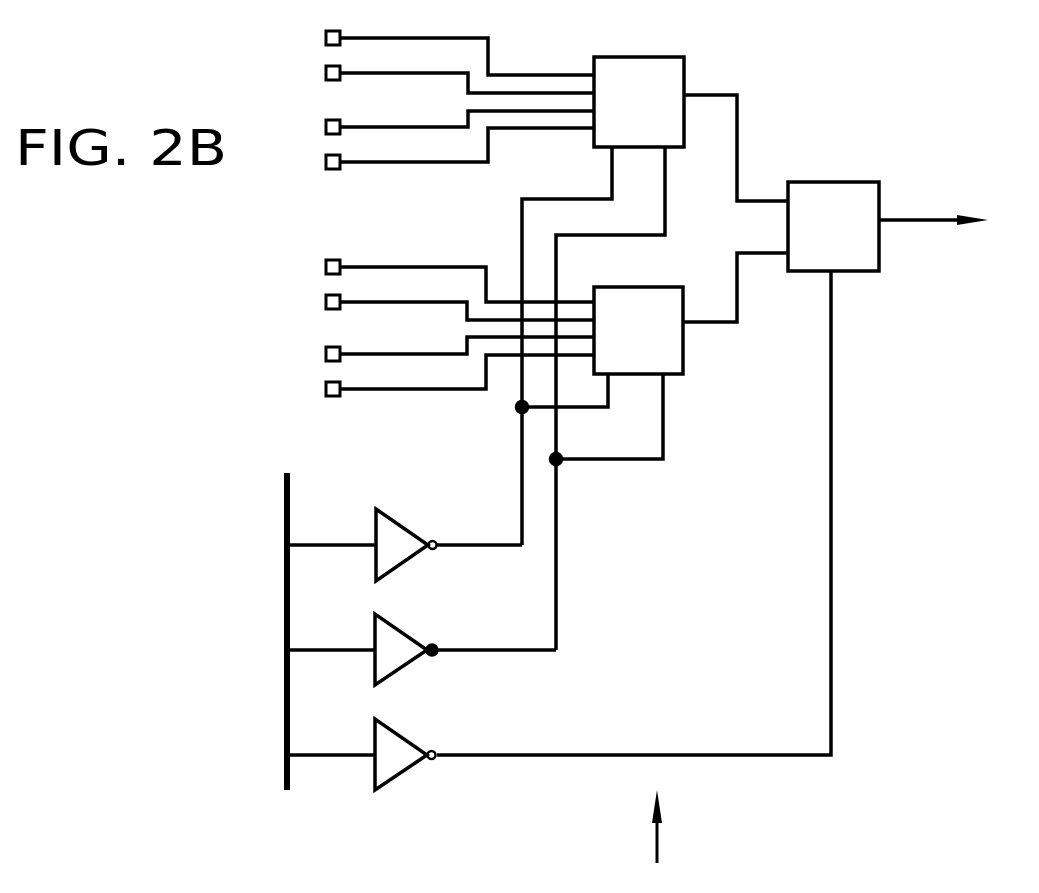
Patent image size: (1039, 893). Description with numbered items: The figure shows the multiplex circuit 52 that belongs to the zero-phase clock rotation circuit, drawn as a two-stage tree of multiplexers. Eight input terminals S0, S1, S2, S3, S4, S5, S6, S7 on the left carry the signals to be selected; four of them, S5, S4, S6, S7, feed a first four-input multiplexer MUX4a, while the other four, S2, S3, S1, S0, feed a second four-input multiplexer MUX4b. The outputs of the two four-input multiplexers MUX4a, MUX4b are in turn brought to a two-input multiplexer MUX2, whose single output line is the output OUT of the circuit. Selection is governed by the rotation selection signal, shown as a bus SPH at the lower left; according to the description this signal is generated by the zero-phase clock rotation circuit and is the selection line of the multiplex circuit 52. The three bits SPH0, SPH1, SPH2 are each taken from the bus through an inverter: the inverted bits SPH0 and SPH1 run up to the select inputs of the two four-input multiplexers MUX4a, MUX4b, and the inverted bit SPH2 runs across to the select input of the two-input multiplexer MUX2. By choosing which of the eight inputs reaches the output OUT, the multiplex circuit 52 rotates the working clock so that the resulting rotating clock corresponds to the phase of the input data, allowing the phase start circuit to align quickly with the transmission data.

The input S0 is at (460, 375).
The input S1 is at (460, 340).
The input S2 is at (460, 266).
The input S3 is at (460, 294).
The input S4 is at (460, 66).
The input S5 is at (460, 39).
The input S6 is at (460, 115).
The input S7 is at (460, 148).
The upper 4-input multiplexer MUX4a is at (691, 129).
The lower 4-input multiplexer MUX4b is at (691, 313).
The 2-input multiplexer MUX2 is at (833, 226).
The output OUT is at (955, 217).
The rotation selection signal SPH is at (335, 624).
The SPH0 inverter SPH0 is at (404, 545).
The SPH1 inverter SPH1 is at (421, 649).
The SPH2 inverter SPH2 is at (559, 530).
The multiplex circuit 52 is at (602, 826).